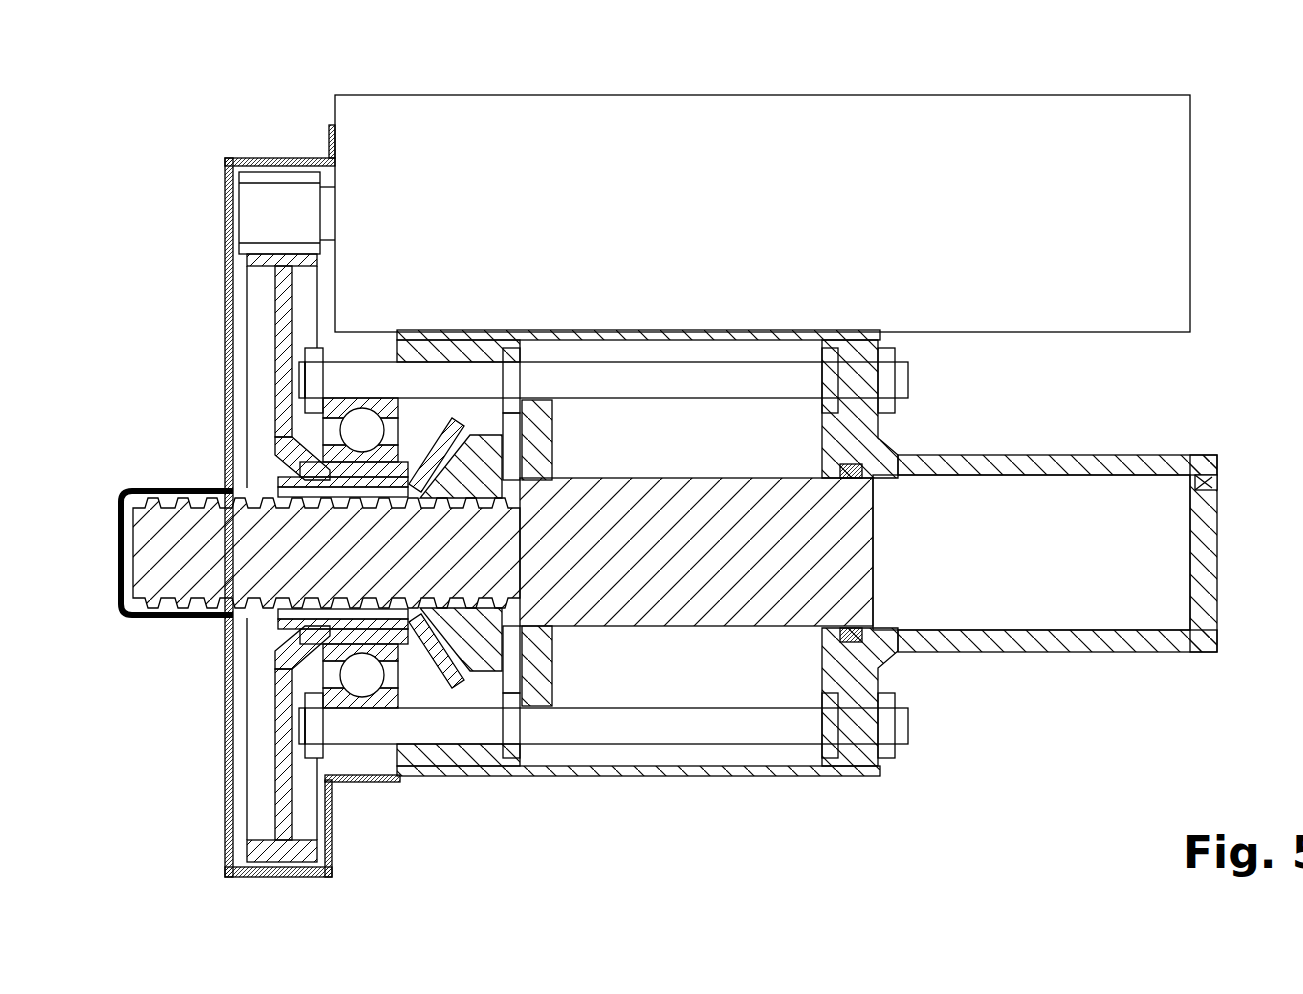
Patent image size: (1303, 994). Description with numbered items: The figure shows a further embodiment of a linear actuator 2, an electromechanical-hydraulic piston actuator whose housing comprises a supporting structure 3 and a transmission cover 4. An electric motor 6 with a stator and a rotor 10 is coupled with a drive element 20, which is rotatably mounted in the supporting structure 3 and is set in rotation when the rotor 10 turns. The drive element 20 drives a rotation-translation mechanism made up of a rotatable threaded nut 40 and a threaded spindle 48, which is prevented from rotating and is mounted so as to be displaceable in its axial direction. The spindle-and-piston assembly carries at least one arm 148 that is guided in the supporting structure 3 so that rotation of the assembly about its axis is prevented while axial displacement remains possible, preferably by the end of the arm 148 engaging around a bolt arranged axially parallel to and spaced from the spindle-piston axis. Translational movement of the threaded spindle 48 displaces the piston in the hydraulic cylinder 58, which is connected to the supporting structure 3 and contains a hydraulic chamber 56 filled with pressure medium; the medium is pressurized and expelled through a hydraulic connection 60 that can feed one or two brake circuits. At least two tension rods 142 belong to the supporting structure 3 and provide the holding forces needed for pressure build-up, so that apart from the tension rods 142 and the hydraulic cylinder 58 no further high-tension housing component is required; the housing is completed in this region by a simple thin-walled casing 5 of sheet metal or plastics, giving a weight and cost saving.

The linear actuator 2 is at (955, 71).
The supporting structure 3 is at (447, 760).
The transmission cover 4 is at (225, 303).
The thin-walled casing 5 is at (757, 777).
The electric motor 6 is at (500, 125).
The rotor 10 is at (285, 195).
The drive element 20 is at (247, 850).
The threaded nut 40 is at (483, 650).
The threaded spindle 48 is at (207, 575).
The hydraulic chamber 56 is at (1068, 597).
The hydraulic cylinder 58 is at (978, 652).
The hydraulic connection 60 is at (1213, 467).
The tension rods 142 is at (755, 383).
The arm 148 is at (540, 440).